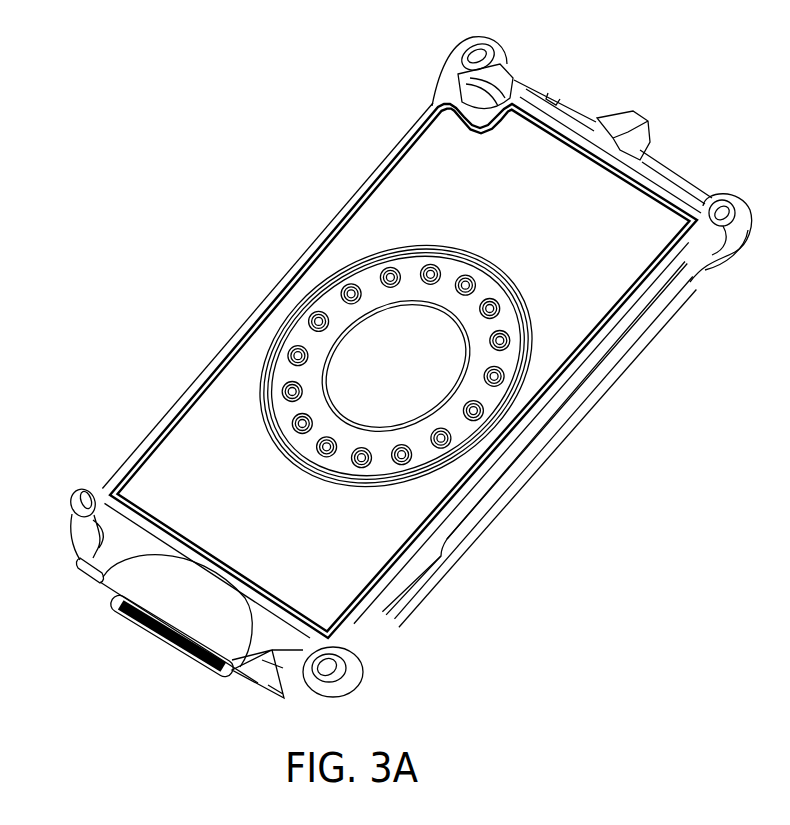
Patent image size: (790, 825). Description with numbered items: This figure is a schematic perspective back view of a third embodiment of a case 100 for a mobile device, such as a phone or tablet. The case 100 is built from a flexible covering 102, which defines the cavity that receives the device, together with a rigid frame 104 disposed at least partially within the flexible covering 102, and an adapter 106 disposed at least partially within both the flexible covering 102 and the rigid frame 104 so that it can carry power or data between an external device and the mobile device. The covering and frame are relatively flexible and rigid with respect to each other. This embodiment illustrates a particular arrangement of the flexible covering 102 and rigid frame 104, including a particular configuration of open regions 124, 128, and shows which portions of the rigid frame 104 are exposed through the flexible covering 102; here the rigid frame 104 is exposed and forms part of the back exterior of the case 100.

The case 100 is at (147, 283).
The flexible covering 102 is at (347, 197).
The rigid frame 104 is at (183, 457).
The adapter 106 is at (165, 650).
The open region 124 is at (466, 77).
The open region 128 is at (417, 367).